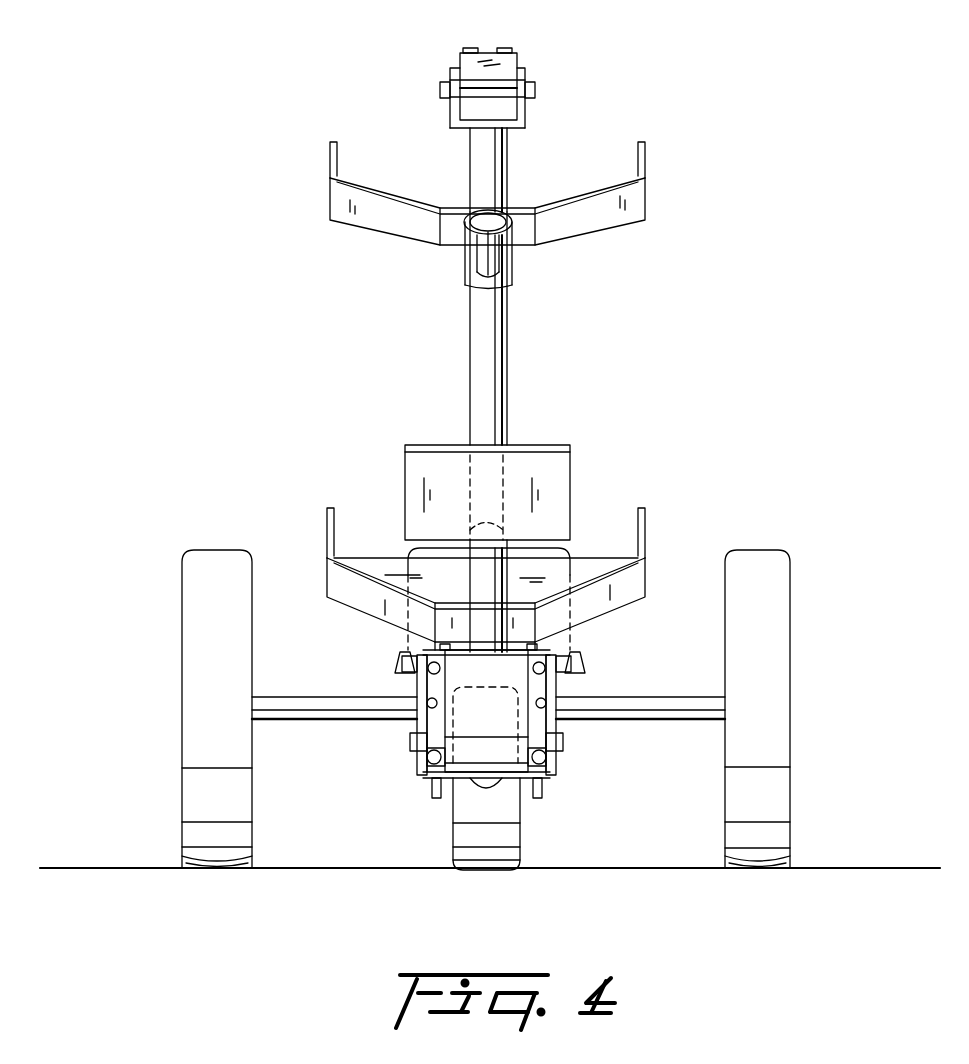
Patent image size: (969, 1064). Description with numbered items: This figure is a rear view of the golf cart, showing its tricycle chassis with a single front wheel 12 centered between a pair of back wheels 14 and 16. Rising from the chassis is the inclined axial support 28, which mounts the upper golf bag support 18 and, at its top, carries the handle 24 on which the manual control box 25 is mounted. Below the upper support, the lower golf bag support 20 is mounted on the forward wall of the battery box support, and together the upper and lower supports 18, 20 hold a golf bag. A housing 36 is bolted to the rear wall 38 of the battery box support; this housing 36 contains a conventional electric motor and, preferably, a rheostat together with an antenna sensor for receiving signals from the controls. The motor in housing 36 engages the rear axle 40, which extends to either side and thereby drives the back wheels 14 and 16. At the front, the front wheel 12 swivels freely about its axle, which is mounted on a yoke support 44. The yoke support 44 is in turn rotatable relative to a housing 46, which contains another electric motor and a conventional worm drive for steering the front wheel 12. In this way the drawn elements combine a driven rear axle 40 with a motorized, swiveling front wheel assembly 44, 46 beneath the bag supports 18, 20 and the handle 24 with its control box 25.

The front wheel 12 is at (520, 826).
The back wheel 14 is at (790, 637).
The back wheel 16 is at (183, 607).
The upper golf bag support 18 is at (645, 172).
The lower golf bag support 20 is at (645, 540).
The handle 24 is at (492, 163).
The manual control box 25 is at (508, 72).
The inclined axial support 28 is at (492, 355).
The housing 36 is at (412, 748).
The rear wall 38 is at (563, 738).
The rear axle 40 is at (662, 705).
The yoke support 44 is at (580, 667).
The housing 46 is at (575, 640).